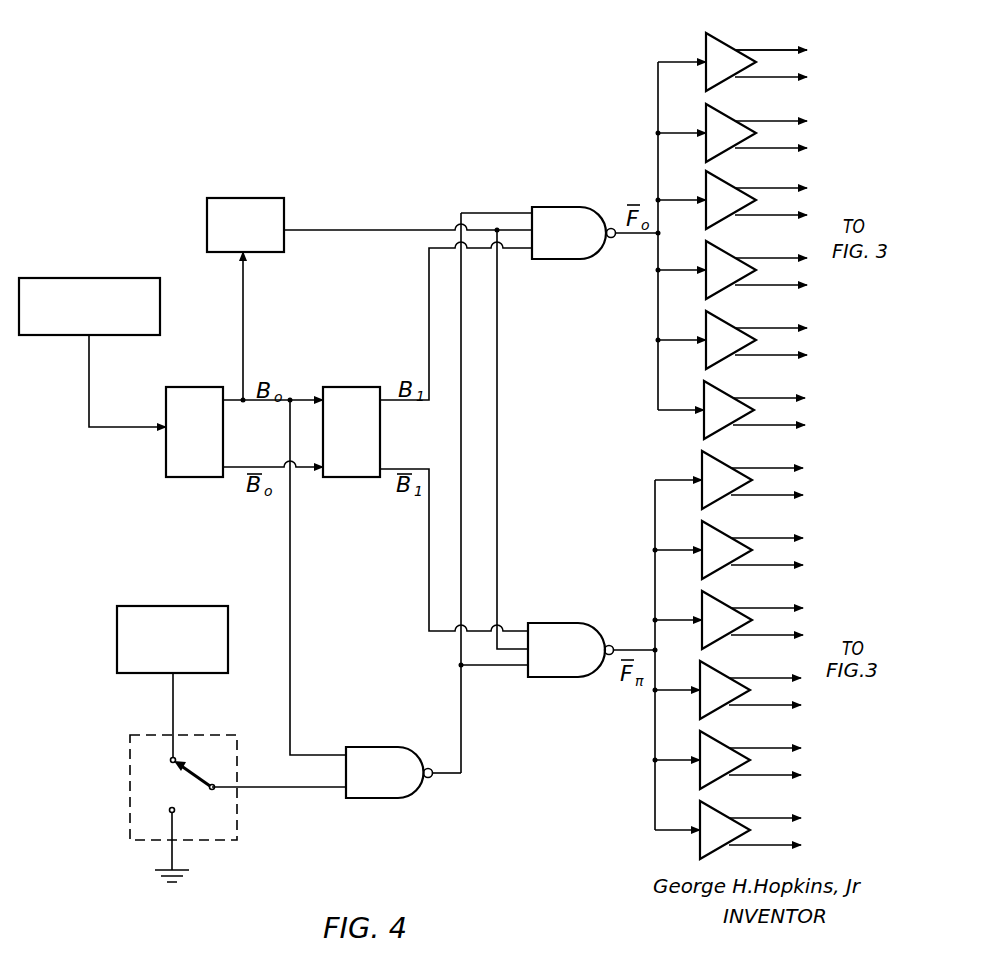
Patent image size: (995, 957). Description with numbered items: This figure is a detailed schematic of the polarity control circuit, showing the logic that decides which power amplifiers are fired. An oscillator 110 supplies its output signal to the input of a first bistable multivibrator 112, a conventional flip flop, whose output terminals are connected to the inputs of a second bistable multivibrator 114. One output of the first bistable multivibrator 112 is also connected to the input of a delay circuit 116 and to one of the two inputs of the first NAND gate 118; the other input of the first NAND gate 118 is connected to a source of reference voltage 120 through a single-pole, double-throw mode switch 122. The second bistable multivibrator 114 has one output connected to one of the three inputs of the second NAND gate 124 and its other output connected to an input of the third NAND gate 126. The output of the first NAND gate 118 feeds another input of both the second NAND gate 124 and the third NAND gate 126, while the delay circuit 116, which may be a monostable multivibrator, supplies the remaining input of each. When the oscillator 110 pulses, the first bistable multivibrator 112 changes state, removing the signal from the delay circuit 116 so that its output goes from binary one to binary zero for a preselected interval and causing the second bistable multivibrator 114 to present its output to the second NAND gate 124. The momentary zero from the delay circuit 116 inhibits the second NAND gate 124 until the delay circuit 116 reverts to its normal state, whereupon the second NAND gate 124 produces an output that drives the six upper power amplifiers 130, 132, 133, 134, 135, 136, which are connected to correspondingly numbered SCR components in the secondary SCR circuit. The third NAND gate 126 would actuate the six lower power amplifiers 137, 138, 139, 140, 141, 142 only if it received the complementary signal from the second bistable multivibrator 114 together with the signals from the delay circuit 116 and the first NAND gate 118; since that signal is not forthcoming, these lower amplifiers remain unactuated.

The oscillator 110 is at (94, 278).
The first bistable multivibrator 112 is at (190, 477).
The second bistable multivibrator 114 is at (361, 477).
The delay circuit 116 is at (252, 198).
The No. 1 NAND gate 118 is at (381, 747).
The source of reference voltage 120 is at (151, 606).
The mode switch 122 is at (128, 790).
The No. 2 NAND gate 124 is at (547, 207).
The No. 3 NAND gate 126 is at (557, 623).
The No. 7 power amplifier 130 is at (732, 49).
The No. 8 power amplifier 132 is at (725, 115).
The No. 9 power amplifier 133 is at (725, 182).
The No. 10 power amplifier 134 is at (725, 252).
The No. 11 power amplifier 135 is at (725, 322).
The No. 12 power amplifier 136 is at (723, 392).
The No. 13 power amplifier 137 is at (721, 462).
The No. 14 power amplifier 138 is at (721, 532).
The No. 15 power amplifier 139 is at (721, 602).
The No. 16 power amplifier 140 is at (719, 672).
The No. 17 power amplifier 141 is at (719, 742).
The No. 18 power amplifier 142 is at (728, 823).